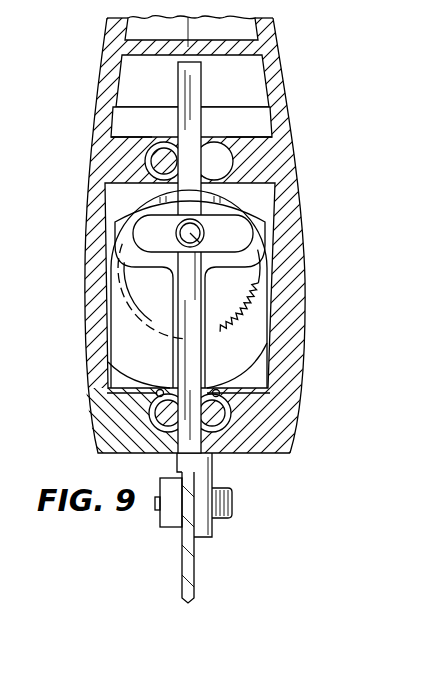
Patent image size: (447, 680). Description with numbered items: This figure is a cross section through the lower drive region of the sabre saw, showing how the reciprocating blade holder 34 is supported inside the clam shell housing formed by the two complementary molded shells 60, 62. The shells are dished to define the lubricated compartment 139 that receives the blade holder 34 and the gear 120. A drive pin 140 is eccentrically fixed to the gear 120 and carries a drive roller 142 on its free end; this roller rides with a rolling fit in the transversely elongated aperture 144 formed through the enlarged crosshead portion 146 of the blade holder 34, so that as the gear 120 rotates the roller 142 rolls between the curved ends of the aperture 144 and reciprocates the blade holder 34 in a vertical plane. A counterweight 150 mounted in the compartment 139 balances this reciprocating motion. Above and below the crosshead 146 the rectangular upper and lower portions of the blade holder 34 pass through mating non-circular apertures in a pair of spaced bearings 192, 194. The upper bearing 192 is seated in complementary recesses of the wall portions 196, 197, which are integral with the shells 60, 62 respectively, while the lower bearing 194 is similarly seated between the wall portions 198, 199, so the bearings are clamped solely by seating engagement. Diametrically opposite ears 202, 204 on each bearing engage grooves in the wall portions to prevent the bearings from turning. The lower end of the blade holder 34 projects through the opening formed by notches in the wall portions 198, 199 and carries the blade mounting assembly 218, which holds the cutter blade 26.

The cutter blade 26 is at (183, 568).
The blade holder 34 is at (201, 80).
The shell 60 is at (86, 278).
The shell 62 is at (305, 280).
The gear 120 is at (257, 303).
The compartment 139 is at (260, 377).
The drive pin 140 is at (204, 236).
The drive roller 142 is at (176, 237).
The aperture 144 is at (125, 219).
The crosshead portion 146 is at (257, 253).
The counterweight 150 is at (93, 190).
The bearing 192 is at (206, 140).
The bearing 194 is at (165, 413).
The wall portion 196 is at (160, 143).
The wall portion 197 is at (232, 140).
The wall portion 198 is at (162, 390).
The wall portion 199 is at (217, 390).
The ear 202 is at (152, 153).
The ear 204 is at (226, 168).
The blade mounting assembly 218 is at (224, 480).